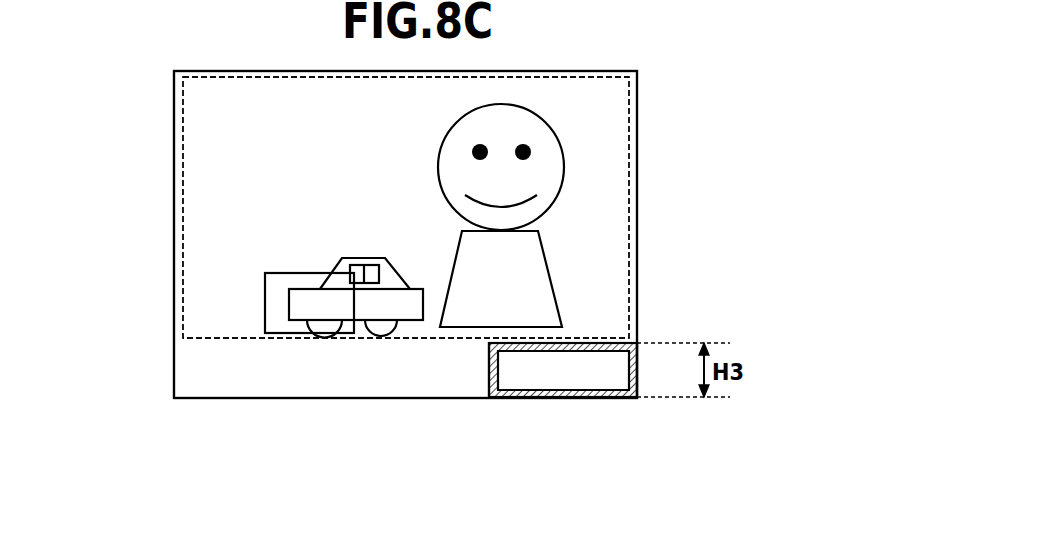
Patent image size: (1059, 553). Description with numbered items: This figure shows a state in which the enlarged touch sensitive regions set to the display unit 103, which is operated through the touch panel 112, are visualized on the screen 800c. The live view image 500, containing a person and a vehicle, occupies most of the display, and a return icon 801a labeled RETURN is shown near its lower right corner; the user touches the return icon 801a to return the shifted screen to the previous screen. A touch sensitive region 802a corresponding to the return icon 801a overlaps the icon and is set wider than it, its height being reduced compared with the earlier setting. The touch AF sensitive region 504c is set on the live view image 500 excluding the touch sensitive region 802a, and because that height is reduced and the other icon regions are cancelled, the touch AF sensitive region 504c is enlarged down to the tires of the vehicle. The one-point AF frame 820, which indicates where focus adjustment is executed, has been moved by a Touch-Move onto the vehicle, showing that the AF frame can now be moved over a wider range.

The display screen 800c is at (173, 101).
The display unit 103 is at (477, 234).
The touch panel 112 is at (638, 105).
The live view image 500 is at (192, 196).
The touch AF sensitive region 504c is at (631, 185).
The one-point AF frame 820 is at (292, 272).
The return icon 801a is at (617, 388).
The touch sensitive region 802a is at (488, 368).